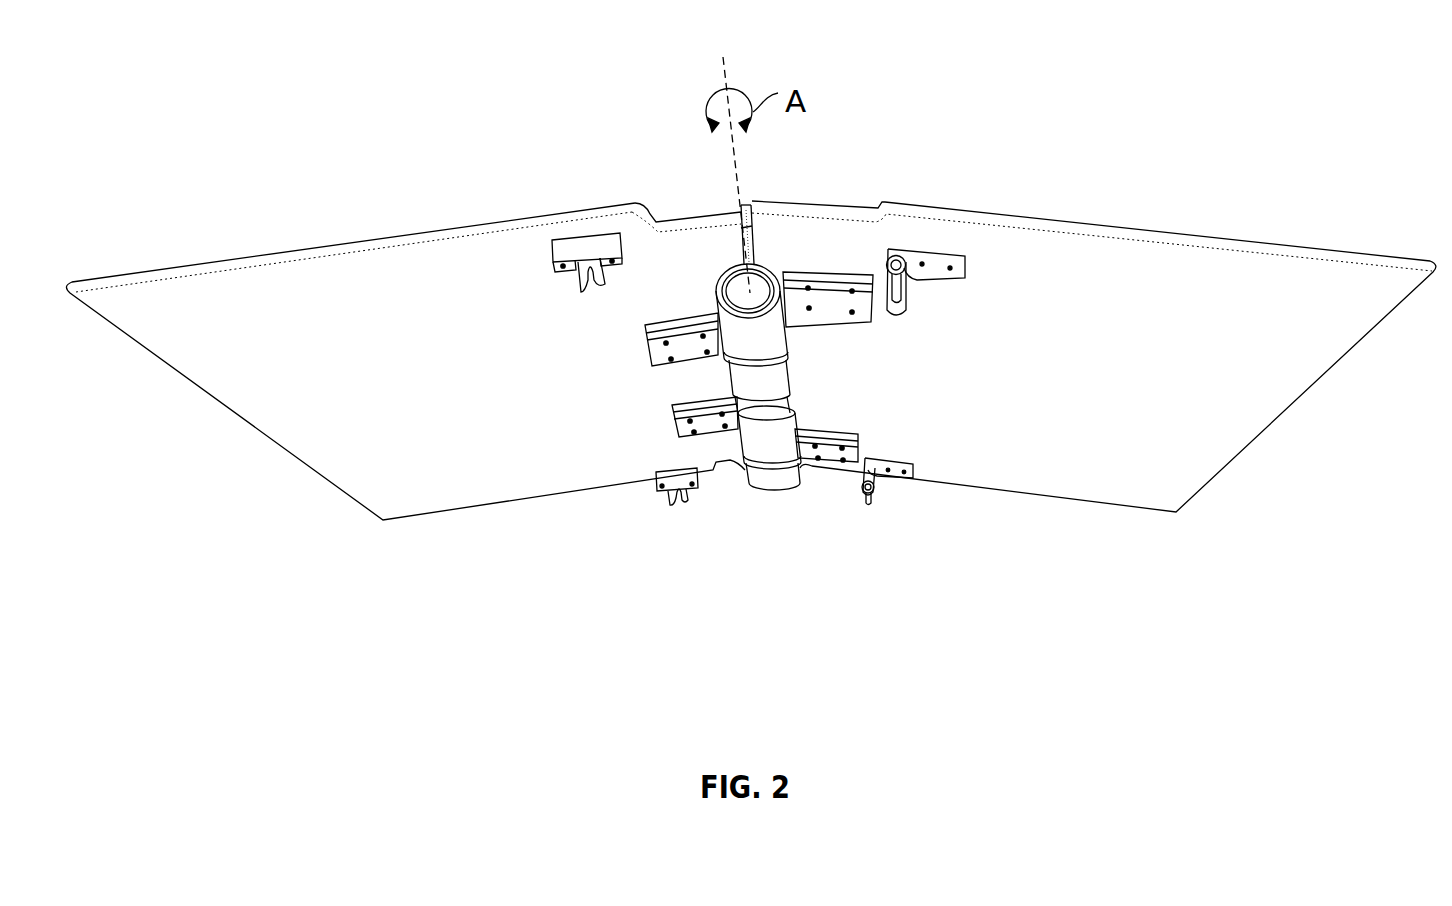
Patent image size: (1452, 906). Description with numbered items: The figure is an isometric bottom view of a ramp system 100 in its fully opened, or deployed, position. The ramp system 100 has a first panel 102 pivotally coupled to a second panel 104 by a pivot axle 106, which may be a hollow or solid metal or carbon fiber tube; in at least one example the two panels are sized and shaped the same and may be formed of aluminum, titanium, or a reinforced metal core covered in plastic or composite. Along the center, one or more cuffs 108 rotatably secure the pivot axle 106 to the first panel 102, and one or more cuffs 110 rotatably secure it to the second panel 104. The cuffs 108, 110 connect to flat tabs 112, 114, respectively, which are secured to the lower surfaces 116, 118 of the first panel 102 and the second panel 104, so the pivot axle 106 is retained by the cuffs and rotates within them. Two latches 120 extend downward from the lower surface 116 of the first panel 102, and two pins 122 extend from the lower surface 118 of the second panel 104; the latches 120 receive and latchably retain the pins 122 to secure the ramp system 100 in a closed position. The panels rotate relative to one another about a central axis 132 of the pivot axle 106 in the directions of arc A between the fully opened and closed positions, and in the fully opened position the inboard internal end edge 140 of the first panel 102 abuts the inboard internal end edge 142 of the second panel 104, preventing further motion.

The ramp system 100 is at (184, 92).
The first panel 102 is at (163, 266).
The second panel 104 is at (1212, 235).
The pivot axle 106 is at (785, 330).
The cuffs 108 is at (727, 363).
The cuffs 110 is at (830, 338).
The flat tabs 112 is at (662, 348).
The flat tabs 114 is at (833, 297).
The lower surface 116 is at (680, 293).
The lower surface 118 is at (858, 377).
The latches 120 is at (580, 247).
The pins 122 is at (913, 276).
The central axis 132 is at (727, 55).
The inboard internal end edge 140 is at (755, 233).
The inboard internal end edge 142 is at (744, 205).